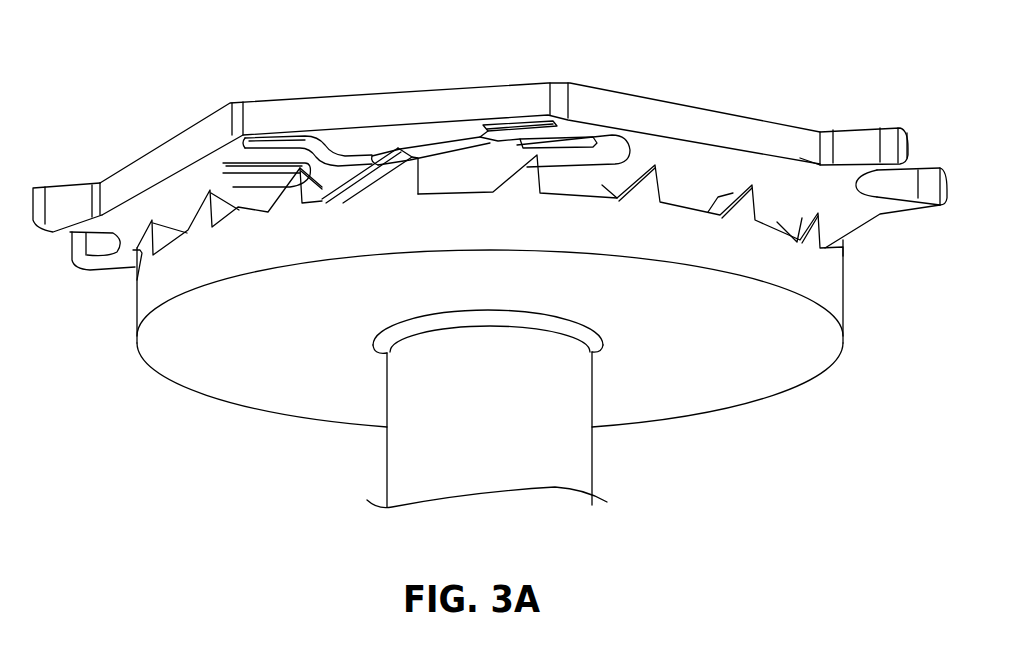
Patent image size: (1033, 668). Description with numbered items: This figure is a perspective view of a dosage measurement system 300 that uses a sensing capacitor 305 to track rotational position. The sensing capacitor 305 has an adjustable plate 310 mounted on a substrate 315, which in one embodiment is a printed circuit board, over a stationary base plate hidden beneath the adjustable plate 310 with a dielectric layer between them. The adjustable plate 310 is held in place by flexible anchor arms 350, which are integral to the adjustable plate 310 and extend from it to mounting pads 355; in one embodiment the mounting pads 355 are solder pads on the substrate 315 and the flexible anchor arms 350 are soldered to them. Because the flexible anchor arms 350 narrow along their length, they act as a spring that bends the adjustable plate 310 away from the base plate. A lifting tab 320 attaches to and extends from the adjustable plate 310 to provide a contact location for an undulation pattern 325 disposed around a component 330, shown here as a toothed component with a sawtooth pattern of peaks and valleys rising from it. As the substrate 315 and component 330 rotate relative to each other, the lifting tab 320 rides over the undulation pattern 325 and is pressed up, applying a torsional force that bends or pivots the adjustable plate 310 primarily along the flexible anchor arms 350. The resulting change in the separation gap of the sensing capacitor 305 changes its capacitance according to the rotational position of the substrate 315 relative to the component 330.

The dosage measurement system 300 is at (141, 57).
The sensing capacitor 305 is at (648, 146).
The adjustable plate 310 is at (585, 153).
The substrate 315 is at (185, 142).
The lifting tab 320 is at (370, 177).
The undulation pattern 325 is at (860, 264).
The component 330 is at (681, 318).
The flexible anchor arms 350 is at (330, 152).
The mounting pads 355 is at (267, 137).